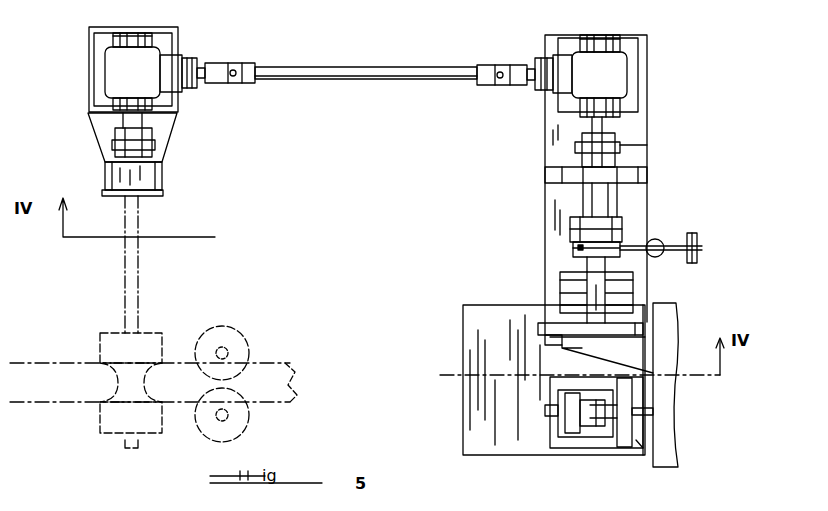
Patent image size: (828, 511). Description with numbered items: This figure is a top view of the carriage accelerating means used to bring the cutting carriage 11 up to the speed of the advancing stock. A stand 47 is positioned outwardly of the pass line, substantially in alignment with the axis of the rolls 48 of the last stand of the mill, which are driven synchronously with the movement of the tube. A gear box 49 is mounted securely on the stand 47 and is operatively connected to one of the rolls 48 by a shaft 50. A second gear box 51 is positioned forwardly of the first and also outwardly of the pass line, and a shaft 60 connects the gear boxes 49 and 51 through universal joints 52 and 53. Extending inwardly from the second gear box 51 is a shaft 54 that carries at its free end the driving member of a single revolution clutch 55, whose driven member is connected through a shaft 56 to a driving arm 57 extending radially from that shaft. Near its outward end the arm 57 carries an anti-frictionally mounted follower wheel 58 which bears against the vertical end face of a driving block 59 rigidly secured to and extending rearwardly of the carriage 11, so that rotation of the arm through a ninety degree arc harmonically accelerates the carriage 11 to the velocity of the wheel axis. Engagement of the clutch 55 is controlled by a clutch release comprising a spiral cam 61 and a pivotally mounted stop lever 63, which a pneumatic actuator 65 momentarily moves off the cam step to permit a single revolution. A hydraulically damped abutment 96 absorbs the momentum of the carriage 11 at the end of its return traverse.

The carriage 11 is at (665, 337).
The stand 47 is at (178, 108).
The rolls 48 is at (150, 335).
The gear box 49 is at (148, 62).
The shaft 50 is at (140, 256).
The second gear box 51 is at (585, 63).
The universal joint 52 is at (230, 66).
The universal joint 53 is at (490, 66).
The shaft 54 is at (603, 127).
The single revolution clutch 55 is at (622, 227).
The shaft 56 is at (600, 300).
The driving arm 57 is at (540, 327).
The follower wheel 58 is at (545, 340).
The driving block 59 is at (578, 350).
The shaft 60 is at (370, 70).
The spiral cam 61 is at (575, 248).
The stop lever 63 is at (690, 240).
The pneumatic actuator 65 is at (655, 257).
The hydraulically damped abutment 96 is at (640, 423).